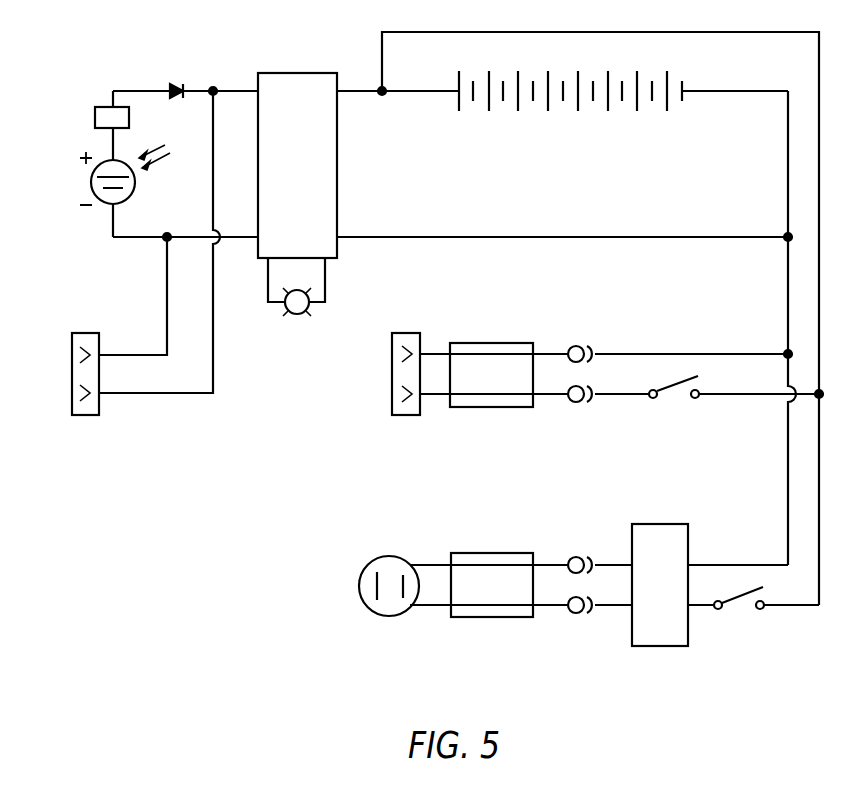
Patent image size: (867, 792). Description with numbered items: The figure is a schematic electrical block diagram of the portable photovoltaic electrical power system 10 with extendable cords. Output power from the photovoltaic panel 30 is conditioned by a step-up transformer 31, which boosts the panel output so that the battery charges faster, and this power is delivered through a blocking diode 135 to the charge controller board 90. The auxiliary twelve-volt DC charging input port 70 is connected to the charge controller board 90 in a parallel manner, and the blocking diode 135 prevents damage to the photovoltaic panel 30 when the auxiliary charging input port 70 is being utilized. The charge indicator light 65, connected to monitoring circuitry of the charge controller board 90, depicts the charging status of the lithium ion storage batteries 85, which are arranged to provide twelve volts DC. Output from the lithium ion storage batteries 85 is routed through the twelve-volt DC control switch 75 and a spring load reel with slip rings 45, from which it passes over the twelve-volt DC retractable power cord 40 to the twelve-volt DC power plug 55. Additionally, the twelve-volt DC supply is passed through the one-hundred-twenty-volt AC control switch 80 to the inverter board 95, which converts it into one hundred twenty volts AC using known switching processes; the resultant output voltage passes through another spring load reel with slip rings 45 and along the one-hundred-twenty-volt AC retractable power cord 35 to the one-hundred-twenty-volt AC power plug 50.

The portable photovoltaic electrical power system 10 is at (101, 576).
The photovoltaic panel 30 is at (72, 158).
The step-up transformer 31 is at (100, 107).
The 120-VAC retractable power cord 35 is at (492, 553).
The 12-VDC retractable power cord 40 is at (490, 343).
The spring load reel with slip rings 45 is at (577, 403).
The 120-VAC power plug 50 is at (382, 556).
The 12-VDC power plug 55 is at (405, 417).
The charge indicator light 65 is at (297, 316).
The auxiliary 12-VDC charging input port 70 is at (87, 418).
The 12-VDC control switch 75 is at (668, 391).
The 120-VAC control switch 80 is at (734, 603).
The lithium ion storage batteries 85 is at (548, 111).
The charge controller board 90 is at (337, 183).
The inverter board 95 is at (660, 647).
The blocking diode 135 is at (172, 84).